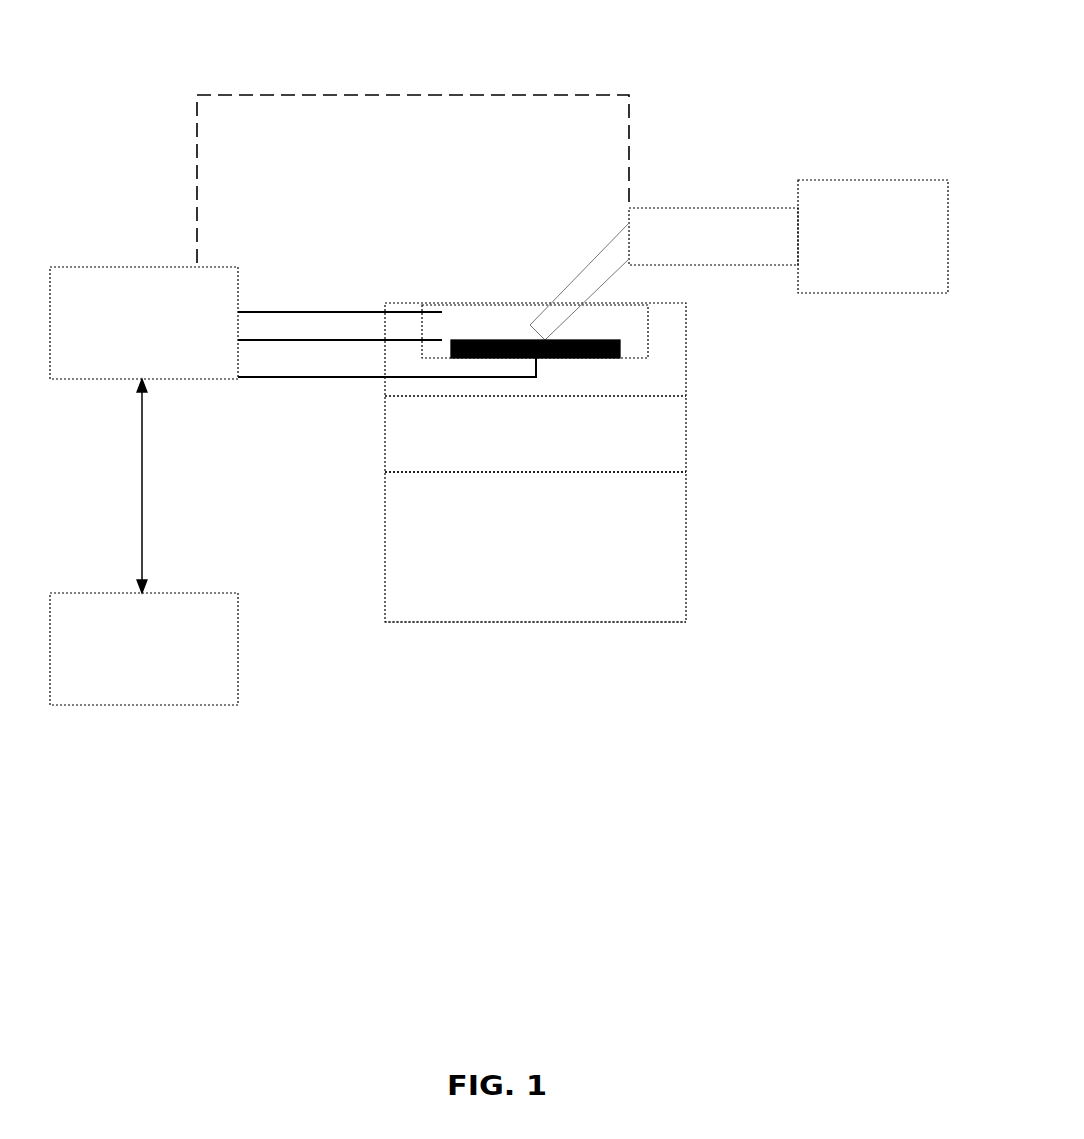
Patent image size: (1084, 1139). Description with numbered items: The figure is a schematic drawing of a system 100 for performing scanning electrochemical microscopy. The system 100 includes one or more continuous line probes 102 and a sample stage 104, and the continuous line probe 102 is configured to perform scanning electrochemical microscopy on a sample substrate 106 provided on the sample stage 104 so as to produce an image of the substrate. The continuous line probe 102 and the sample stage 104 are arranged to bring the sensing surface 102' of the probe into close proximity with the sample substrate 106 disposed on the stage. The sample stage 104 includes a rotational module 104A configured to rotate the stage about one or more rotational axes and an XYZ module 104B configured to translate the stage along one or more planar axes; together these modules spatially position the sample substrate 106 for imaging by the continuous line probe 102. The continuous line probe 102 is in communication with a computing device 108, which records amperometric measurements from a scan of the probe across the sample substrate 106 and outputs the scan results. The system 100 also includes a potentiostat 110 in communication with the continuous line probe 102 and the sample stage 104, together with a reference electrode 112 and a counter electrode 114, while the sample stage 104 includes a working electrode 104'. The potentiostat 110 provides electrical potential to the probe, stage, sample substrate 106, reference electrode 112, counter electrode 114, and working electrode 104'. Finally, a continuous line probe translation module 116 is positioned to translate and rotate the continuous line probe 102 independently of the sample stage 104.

The system 100 is at (183, 68).
The continuous line probe 102 is at (650, 244).
The sensing surface 102' is at (497, 289).
The sample stage 104 is at (582, 462).
The working electrode 104' is at (387, 398).
The rotational module 104A is at (396, 449).
The XYZ module 104B is at (672, 592).
The sample substrate 106 is at (568, 360).
The computing device 108 is at (163, 662).
The potentiostat 110 is at (163, 338).
The reference electrode 112 is at (373, 312).
The counter electrode 114 is at (340, 338).
The continuous line probe translation module 116 is at (885, 178).